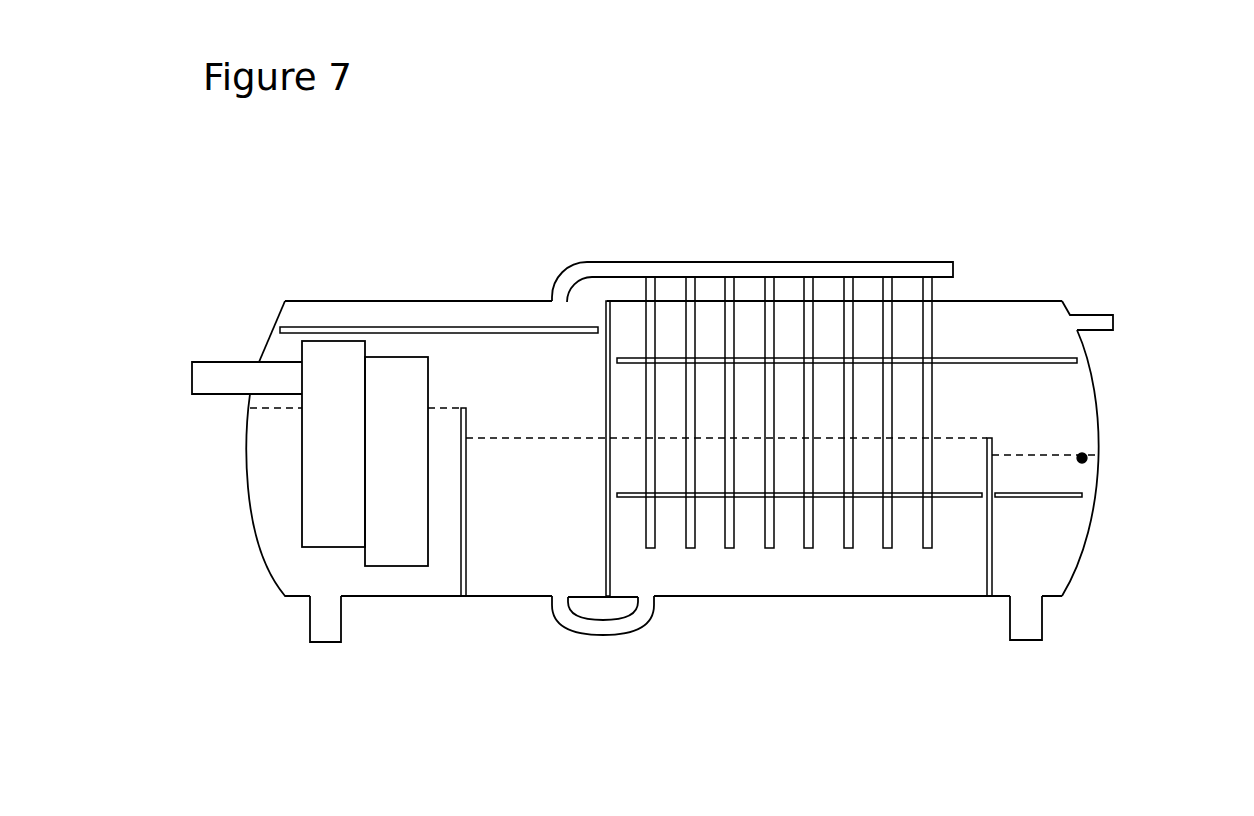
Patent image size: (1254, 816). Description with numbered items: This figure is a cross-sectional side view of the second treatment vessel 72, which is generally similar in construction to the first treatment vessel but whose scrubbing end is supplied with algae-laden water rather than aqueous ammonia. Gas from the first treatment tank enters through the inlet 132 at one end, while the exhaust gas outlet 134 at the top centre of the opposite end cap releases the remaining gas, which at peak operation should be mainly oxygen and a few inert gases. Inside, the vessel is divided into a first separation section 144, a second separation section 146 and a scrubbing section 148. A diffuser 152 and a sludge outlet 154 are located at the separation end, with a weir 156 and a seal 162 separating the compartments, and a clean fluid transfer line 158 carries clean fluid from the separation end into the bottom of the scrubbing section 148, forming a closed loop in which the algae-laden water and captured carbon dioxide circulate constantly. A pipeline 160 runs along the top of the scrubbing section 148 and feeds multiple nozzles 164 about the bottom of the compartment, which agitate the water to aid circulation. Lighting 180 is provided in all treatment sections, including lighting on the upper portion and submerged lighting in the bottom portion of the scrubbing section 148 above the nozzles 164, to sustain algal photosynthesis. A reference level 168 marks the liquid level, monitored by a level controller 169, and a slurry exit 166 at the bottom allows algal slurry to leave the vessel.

The second treatment vessel 72 is at (628, 115).
The inlet 132 is at (232, 362).
The exhaust gas outlet 134 is at (1093, 312).
The first separation section 144 is at (290, 564).
The second separation section 146 is at (545, 540).
The scrubbing section 148 is at (986, 332).
The diffuser 152 is at (303, 423).
The sludge outlet 154 is at (312, 617).
The weir 156 is at (460, 562).
The clean fluid transfer line 158 is at (617, 635).
The pipeline 160 is at (638, 262).
The seal 162 is at (610, 547).
The multiple nozzles 164 is at (932, 527).
The slurry exit 166 is at (1043, 625).
The reference level 168 is at (973, 438).
The level controller 169 is at (1085, 455).
The lighting 180 is at (437, 327).